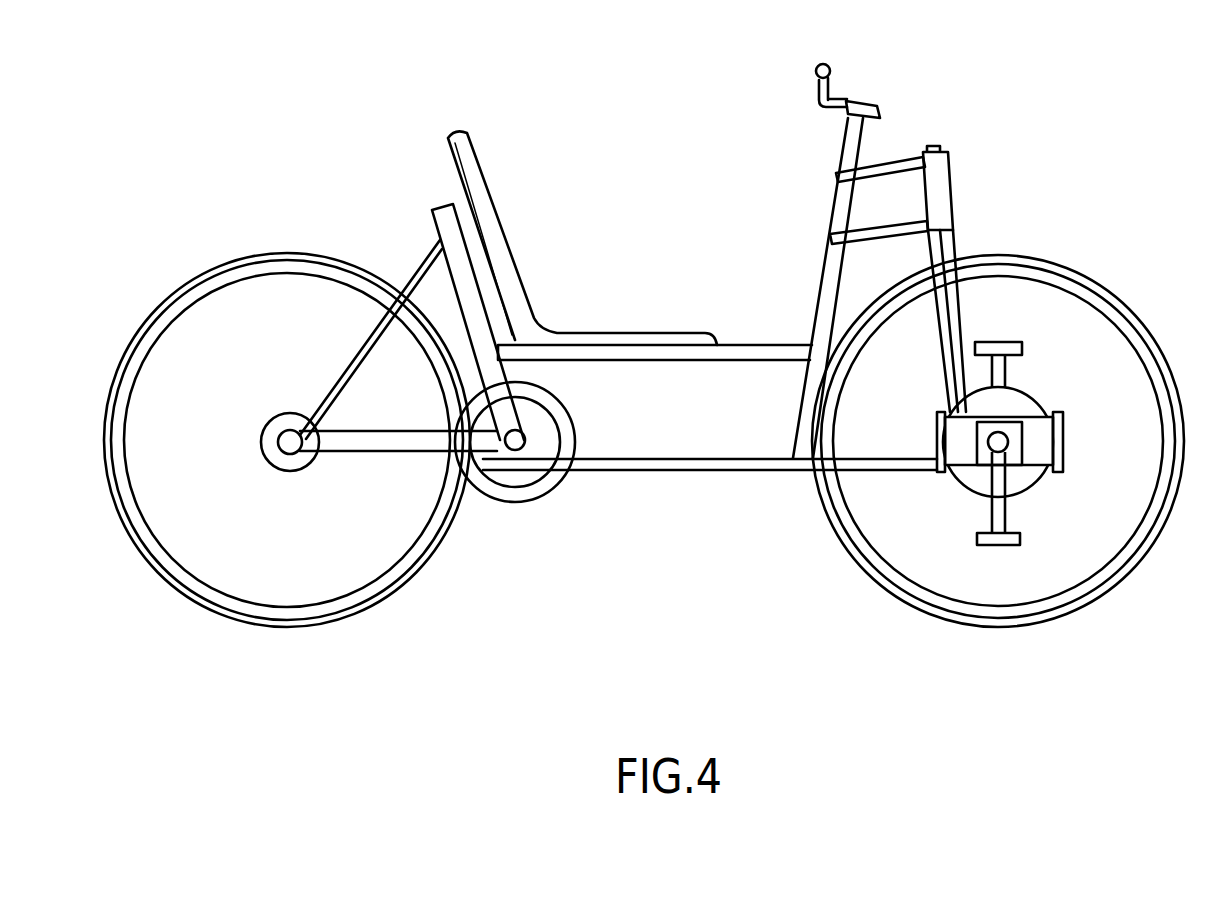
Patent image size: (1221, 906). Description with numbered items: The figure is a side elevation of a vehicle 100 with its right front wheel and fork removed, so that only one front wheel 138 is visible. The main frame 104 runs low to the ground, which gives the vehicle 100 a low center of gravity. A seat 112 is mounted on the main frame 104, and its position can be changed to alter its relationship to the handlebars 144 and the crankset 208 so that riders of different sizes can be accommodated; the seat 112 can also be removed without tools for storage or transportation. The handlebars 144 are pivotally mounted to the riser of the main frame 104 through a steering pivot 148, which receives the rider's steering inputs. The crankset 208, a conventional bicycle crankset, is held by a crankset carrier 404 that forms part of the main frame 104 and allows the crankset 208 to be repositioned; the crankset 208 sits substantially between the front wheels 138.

The vehicle 100 is at (644, 340).
The main frame 104 is at (715, 462).
The seat 112 is at (470, 138).
The front wheel 138 is at (1087, 600).
The handlebars 144 is at (830, 67).
The steering pivot 148 is at (882, 110).
The crankset 208 is at (1005, 370).
The crankset carrier 404 is at (1063, 440).